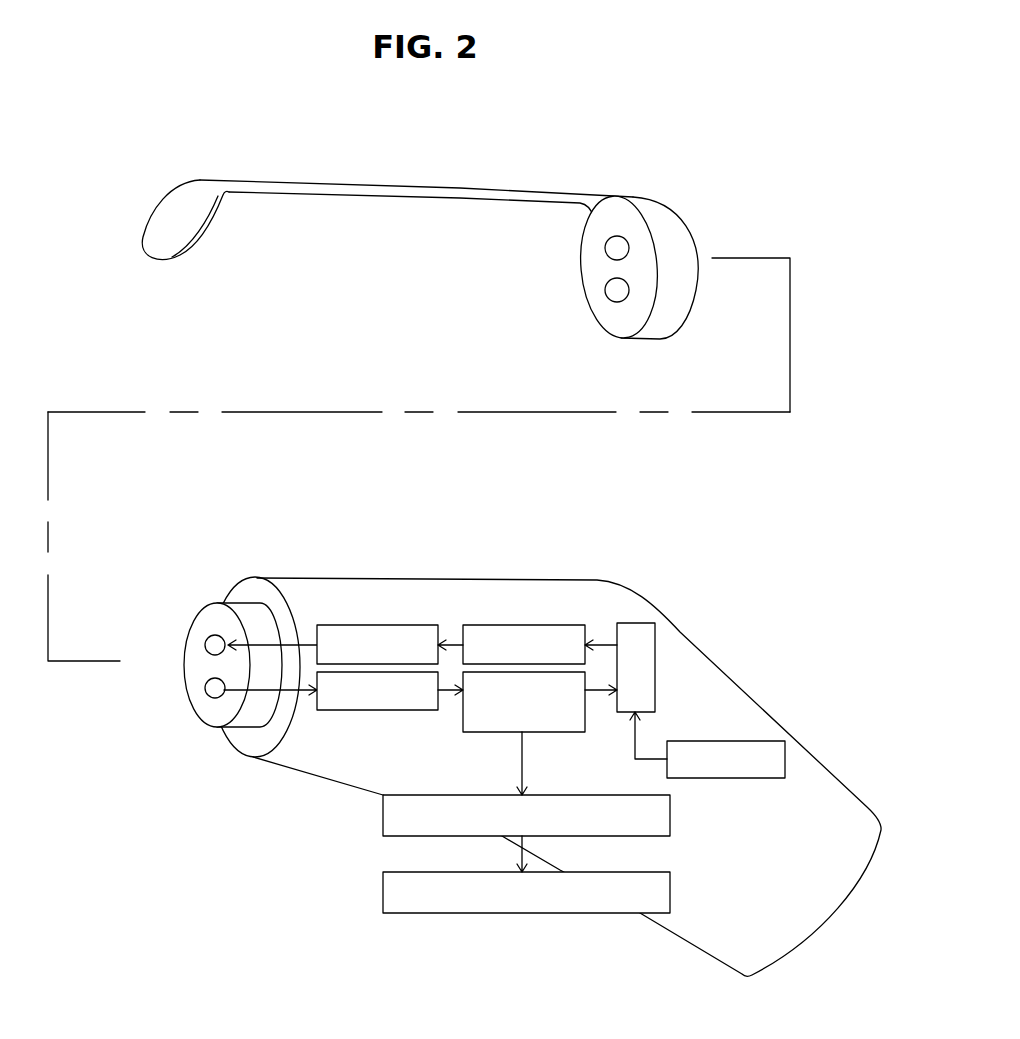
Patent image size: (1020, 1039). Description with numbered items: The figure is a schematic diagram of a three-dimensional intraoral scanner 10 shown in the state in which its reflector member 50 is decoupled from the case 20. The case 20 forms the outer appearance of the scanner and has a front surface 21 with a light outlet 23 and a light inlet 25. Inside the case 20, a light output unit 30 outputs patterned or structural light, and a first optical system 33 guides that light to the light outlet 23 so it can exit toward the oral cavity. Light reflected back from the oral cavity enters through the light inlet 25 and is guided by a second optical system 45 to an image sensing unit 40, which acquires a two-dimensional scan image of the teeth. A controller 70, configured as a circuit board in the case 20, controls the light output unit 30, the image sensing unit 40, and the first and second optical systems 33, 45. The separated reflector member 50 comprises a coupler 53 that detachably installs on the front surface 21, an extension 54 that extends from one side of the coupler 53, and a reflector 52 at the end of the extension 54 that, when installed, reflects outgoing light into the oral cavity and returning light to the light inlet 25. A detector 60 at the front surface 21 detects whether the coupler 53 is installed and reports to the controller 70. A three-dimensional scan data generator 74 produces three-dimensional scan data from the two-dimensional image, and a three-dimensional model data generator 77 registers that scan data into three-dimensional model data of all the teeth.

The 3D intraoral scanner 10 is at (70, 334).
The case 20 is at (503, 747).
The front surface 21 is at (203, 663).
The light outlet 23 is at (215, 637).
The light inlet 25 is at (207, 690).
The light output unit 30 is at (522, 624).
The first optical system 33 is at (378, 624).
The image sensing unit 40 is at (463, 718).
The second optical system 45 is at (367, 710).
The reflector member 50 is at (420, 285).
The reflector 52 is at (177, 227).
The coupler 53 is at (597, 310).
The extension 54 is at (390, 195).
The detector 60 is at (725, 778).
The controller 70 is at (633, 622).
The 3D scan data generator 74 is at (383, 811).
The 3D model data generator 77 is at (383, 890).